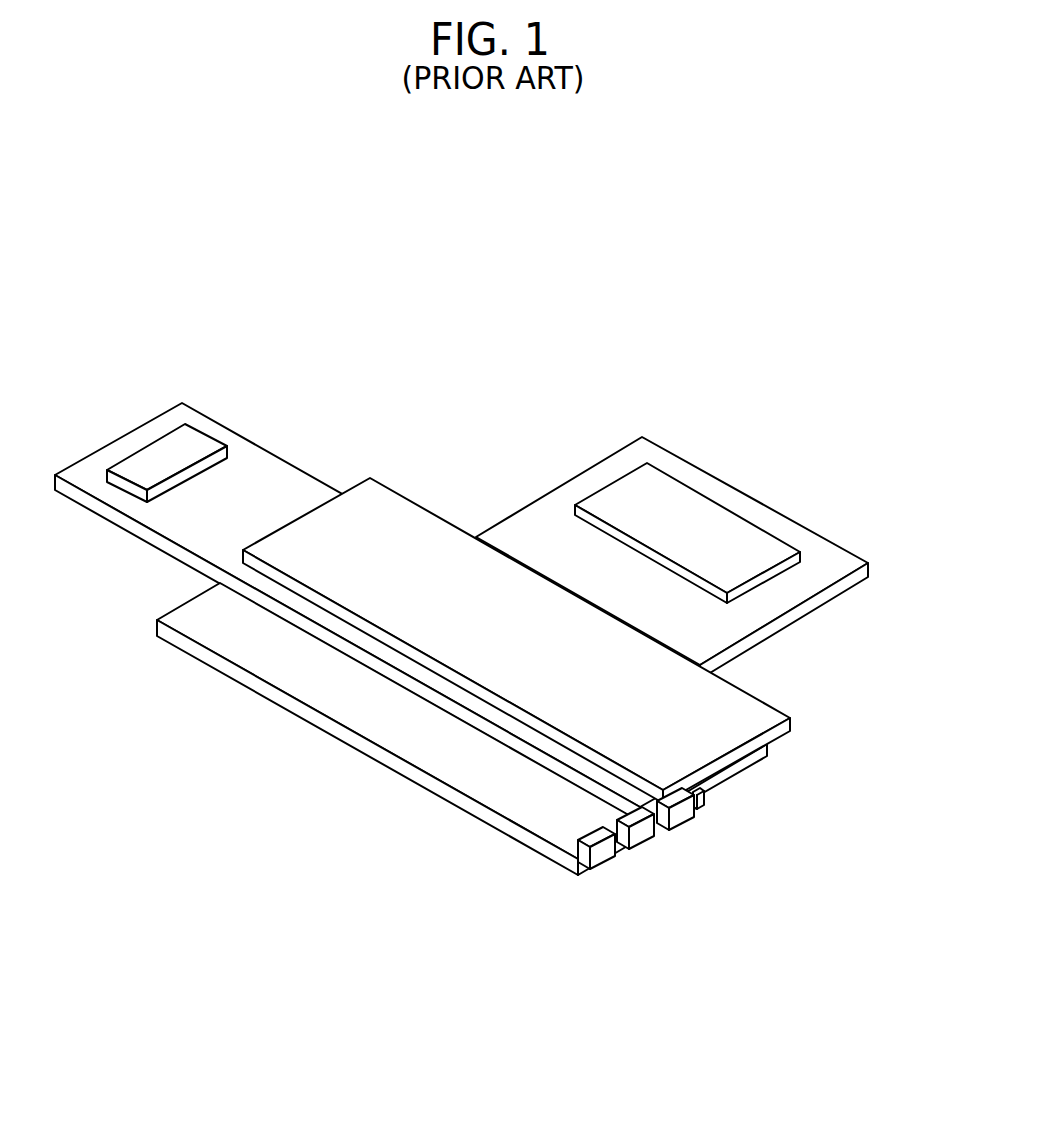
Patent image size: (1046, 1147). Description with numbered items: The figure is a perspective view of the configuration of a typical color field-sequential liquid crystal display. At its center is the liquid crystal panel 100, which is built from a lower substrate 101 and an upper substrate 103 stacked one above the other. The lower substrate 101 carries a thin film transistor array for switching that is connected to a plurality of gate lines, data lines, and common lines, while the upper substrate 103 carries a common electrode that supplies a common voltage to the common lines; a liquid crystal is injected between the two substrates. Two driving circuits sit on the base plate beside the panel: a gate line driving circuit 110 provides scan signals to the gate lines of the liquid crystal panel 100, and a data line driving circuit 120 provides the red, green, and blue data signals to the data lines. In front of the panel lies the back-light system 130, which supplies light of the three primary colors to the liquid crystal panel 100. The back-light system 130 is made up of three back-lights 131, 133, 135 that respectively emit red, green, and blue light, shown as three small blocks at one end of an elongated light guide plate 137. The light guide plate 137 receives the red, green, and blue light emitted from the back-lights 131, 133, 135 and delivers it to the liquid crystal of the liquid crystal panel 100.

The liquid crystal panel 100 is at (593, 645).
The lower substrate 101 is at (742, 768).
The upper substrate 103 is at (738, 720).
The gate line driving circuit 110 is at (197, 438).
The data line driving circuit 120 is at (707, 518).
The back-light system 130 is at (447, 784).
The R back-light 131 is at (603, 858).
The G back-light 133 is at (638, 838).
The B back-light 135 is at (677, 813).
The light guide plate 137 is at (422, 750).